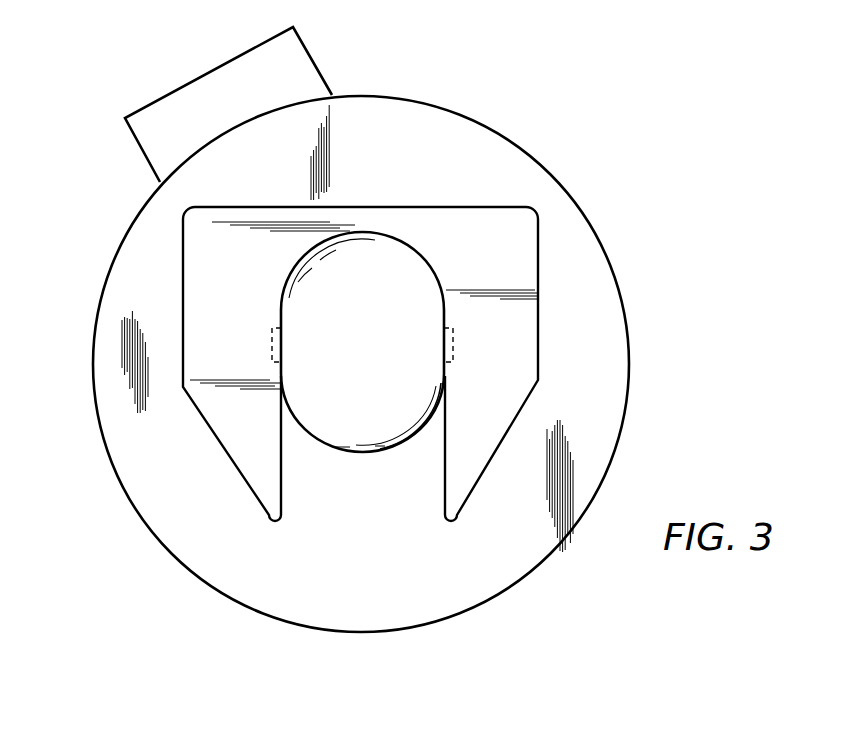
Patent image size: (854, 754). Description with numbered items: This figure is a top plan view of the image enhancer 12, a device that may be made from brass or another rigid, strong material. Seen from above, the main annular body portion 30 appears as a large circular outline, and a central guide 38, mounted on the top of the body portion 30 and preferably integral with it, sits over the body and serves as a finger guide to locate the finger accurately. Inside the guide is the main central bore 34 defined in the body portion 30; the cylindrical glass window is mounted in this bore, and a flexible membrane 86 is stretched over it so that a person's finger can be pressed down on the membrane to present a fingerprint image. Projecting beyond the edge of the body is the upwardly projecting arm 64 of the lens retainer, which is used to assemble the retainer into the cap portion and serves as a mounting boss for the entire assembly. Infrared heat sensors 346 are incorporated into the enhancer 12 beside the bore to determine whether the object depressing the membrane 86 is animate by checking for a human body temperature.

The image enhancer 12 is at (82, 282).
The main annular body portion 30 is at (560, 180).
The upwardly projecting arm 64 is at (322, 70).
The central guide 38 is at (538, 293).
The main central bore 34 is at (324, 447).
The flexible membrane 86 is at (400, 432).
The infrared heat sensors 346 is at (271, 345).